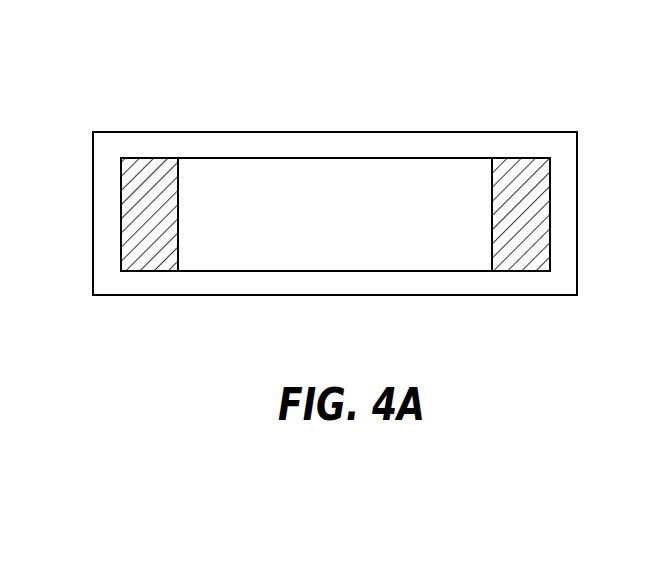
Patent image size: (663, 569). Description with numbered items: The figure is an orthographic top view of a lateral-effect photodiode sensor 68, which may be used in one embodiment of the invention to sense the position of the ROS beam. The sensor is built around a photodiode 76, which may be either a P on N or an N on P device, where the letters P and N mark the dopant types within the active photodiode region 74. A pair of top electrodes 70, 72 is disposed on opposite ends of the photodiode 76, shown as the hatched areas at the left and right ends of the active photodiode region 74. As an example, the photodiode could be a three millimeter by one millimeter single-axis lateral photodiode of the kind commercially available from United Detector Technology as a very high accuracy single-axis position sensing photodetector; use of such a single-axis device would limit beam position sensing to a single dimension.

The lateral-effect photodiode sensor 68 is at (197, 40).
The top electrode 70 is at (148, 271).
The top electrode 72 is at (522, 271).
The active photodiode region 74 is at (358, 158).
The photodiode 76 is at (168, 132).